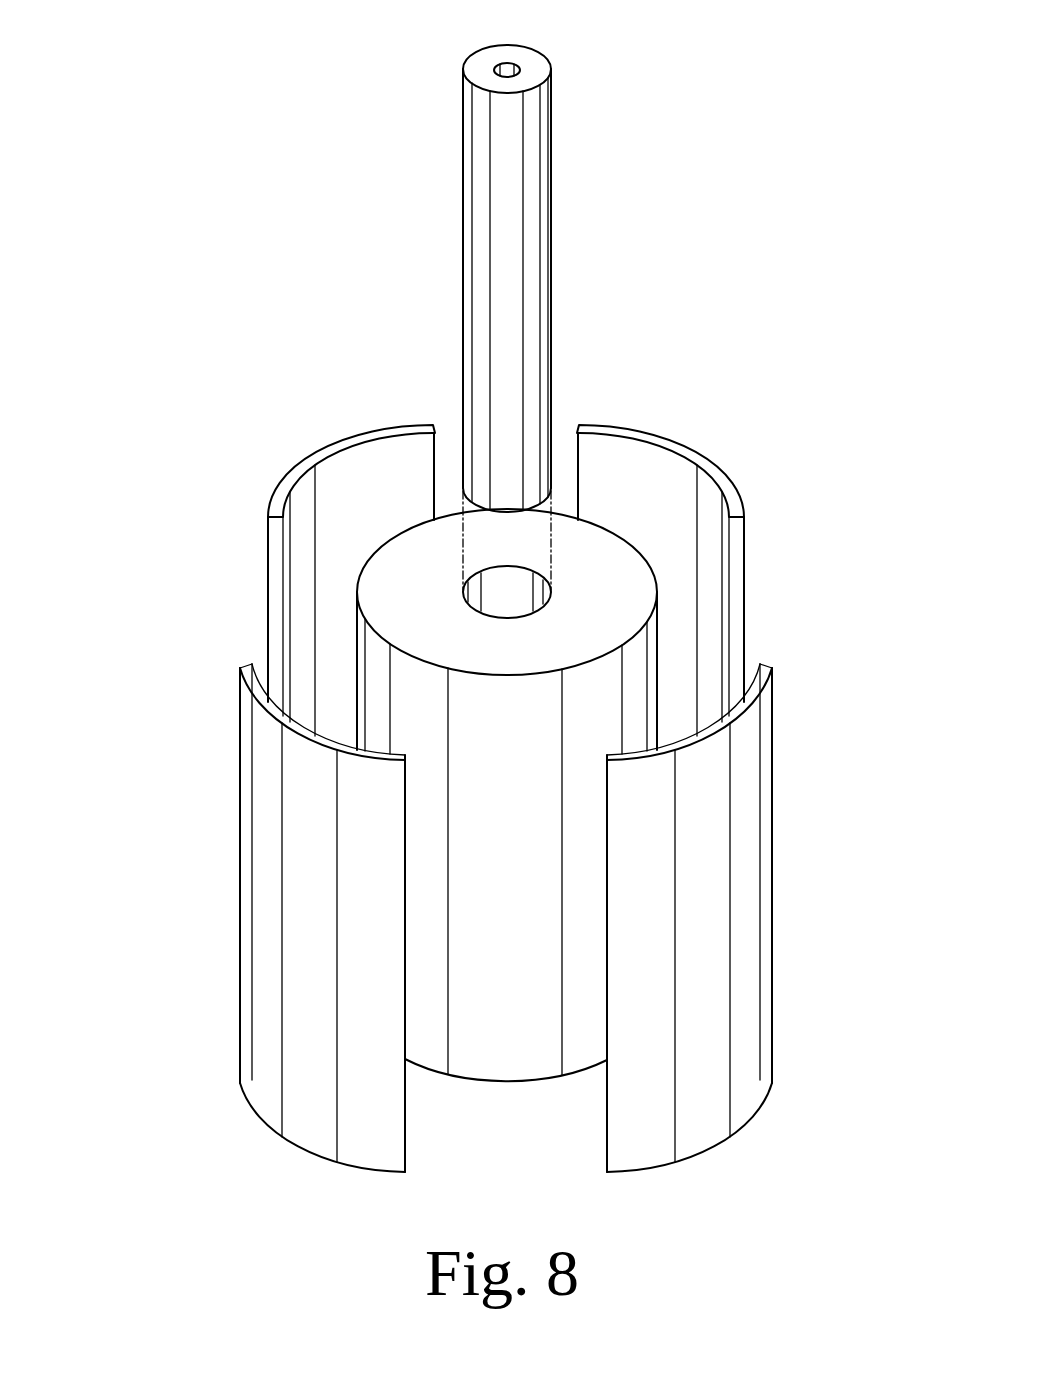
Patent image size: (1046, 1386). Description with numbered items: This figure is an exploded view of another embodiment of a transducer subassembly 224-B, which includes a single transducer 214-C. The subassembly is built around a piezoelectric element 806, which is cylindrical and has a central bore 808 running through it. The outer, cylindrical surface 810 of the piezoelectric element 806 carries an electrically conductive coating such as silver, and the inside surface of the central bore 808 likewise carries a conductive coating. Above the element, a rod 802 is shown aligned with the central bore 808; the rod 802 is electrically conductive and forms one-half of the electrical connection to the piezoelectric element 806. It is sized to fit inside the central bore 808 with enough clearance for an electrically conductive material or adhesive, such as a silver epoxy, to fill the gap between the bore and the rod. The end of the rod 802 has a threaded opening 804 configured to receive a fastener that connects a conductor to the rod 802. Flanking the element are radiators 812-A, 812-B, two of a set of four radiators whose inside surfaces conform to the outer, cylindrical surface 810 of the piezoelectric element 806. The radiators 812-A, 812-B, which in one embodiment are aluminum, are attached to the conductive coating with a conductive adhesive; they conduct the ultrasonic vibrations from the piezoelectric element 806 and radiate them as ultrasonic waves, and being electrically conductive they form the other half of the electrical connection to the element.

The transducer subassembly 224-B is at (163, 97).
The transducer 214-C is at (845, 128).
The rod 802 is at (552, 290).
The threaded opening 804 is at (521, 70).
The piezoelectric element 806 is at (497, 1082).
The central bore 808 is at (552, 590).
The outer cylindrical surface 810 is at (527, 818).
The radiator 812-A is at (239, 1062).
The radiator 812-B is at (773, 1062).